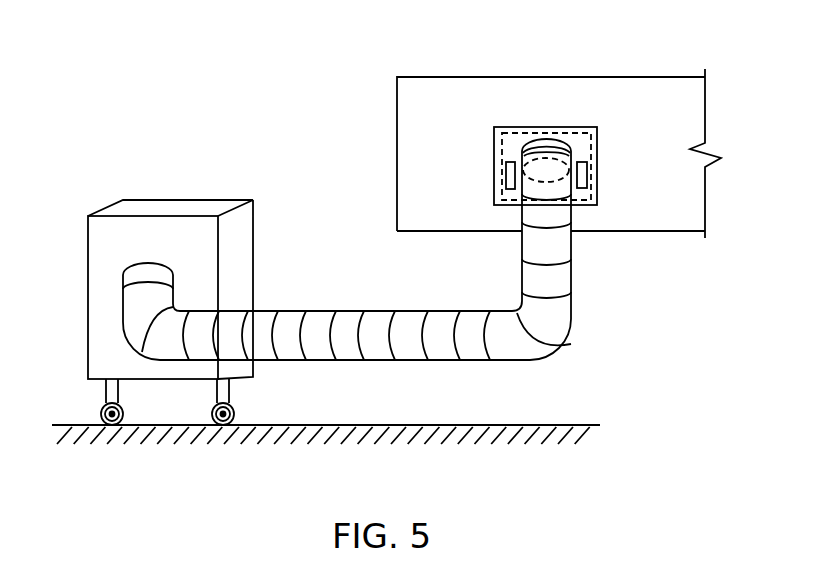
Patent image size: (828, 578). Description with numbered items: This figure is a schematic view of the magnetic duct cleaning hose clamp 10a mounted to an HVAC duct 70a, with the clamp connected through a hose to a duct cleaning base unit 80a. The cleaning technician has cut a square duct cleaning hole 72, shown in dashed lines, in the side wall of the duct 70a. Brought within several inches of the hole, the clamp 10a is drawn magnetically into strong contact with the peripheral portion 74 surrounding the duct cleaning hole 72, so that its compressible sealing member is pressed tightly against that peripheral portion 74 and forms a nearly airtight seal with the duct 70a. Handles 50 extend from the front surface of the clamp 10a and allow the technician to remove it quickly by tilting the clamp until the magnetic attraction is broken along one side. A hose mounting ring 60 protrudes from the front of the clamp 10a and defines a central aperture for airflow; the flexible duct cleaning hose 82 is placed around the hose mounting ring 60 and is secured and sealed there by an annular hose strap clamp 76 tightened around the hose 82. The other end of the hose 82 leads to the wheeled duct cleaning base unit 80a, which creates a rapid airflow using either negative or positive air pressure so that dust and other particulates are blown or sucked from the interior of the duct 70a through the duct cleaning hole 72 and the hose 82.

The magnetic duct cleaning hose clamp 10a is at (553, 154).
The handles 50 is at (586, 178).
The hose mounting ring 60 is at (561, 142).
The HVAC duct 70a is at (504, 77).
The duct cleaning hole 72 is at (510, 142).
The peripheral portion 74 is at (596, 131).
The hose strap clamp 76 is at (537, 140).
The duct cleaning base unit 80a is at (190, 210).
The duct cleaning hose 82 is at (347, 330).